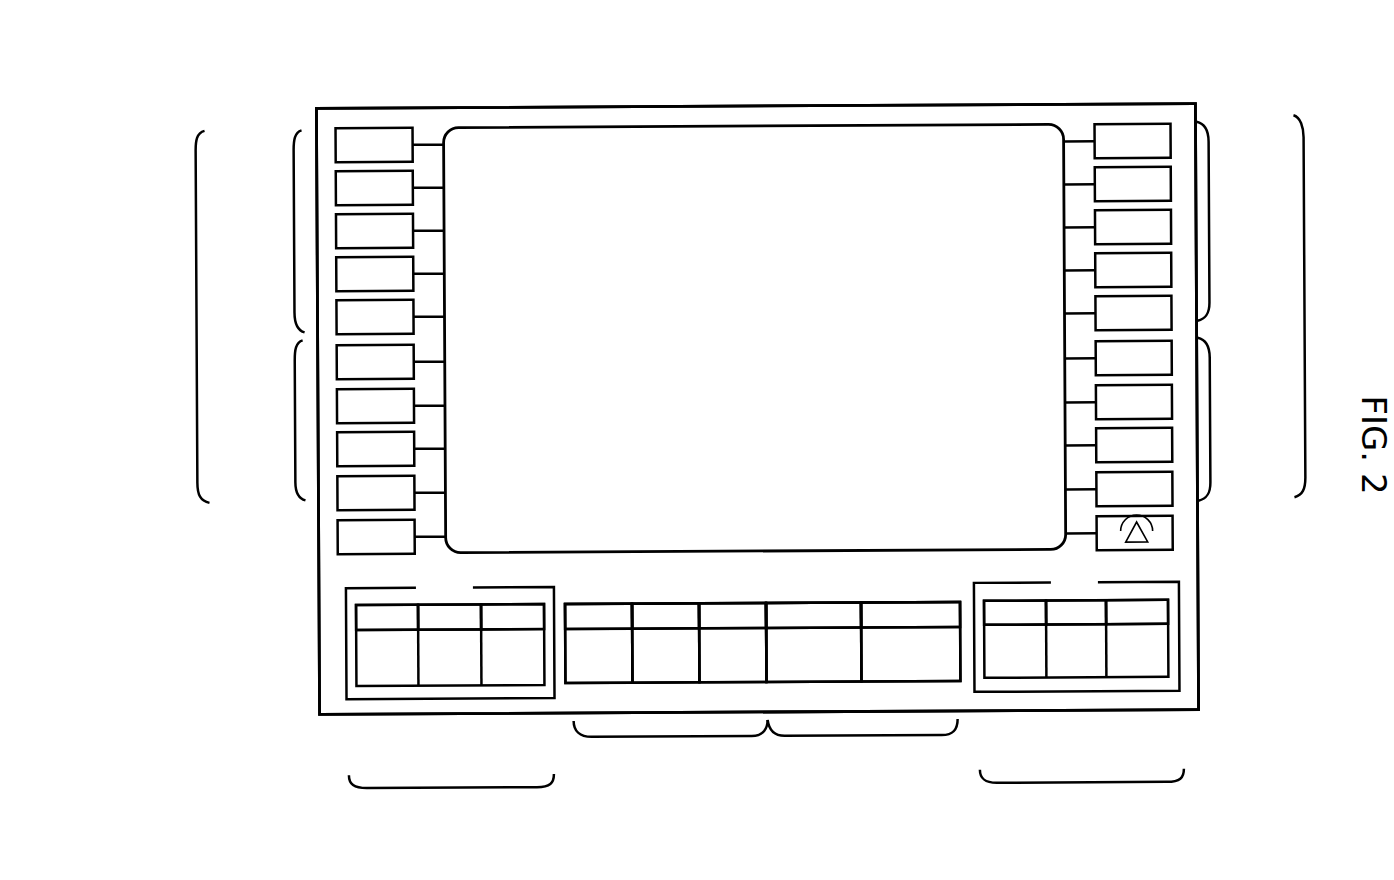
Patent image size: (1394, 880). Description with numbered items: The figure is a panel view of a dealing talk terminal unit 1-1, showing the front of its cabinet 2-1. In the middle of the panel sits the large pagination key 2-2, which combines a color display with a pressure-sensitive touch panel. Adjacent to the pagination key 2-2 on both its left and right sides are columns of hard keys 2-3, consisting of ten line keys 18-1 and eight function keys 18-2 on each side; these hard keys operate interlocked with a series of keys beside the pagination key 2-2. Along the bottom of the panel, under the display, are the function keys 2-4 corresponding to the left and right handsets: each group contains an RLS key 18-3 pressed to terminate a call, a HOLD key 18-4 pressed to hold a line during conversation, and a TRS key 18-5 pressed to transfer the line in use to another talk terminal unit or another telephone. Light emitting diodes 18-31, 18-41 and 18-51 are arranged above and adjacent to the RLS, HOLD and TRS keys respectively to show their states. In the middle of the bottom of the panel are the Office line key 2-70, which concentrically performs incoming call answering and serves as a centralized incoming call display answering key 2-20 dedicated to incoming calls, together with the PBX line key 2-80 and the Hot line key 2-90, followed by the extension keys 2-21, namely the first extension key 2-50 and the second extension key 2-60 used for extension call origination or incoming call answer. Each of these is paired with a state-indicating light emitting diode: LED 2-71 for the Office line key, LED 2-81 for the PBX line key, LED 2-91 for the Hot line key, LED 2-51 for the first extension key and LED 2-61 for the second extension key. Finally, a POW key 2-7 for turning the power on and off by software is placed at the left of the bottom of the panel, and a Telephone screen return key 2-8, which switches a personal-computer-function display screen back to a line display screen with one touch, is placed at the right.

The talk terminal unit 1-1 is at (430, 94).
The cabinet 2-1 is at (500, 106).
The pagination key 2-2 is at (680, 132).
The hard keys 2-3 is at (197, 290).
The line keys 18-1 is at (295, 195).
The function keys 18-2 is at (295, 378).
The "POW" key 2-7 is at (337, 535).
The "Telephone screen return" key 2-8 is at (1172, 533).
The function keys 2-4 is at (1018, 786).
The "RLS" keys 18-3 is at (382, 680).
The "HOLD" keys 18-4 is at (460, 678).
The "TRS" keys 18-5 is at (533, 678).
The light emitting diodes 18-31 is at (362, 620).
The light emitting diodes 18-41 is at (430, 620).
The light emitting diodes 18-51 is at (495, 620).
The centralized incoming call display answering key 2-20 is at (655, 738).
The "Office line" key 2-70 is at (580, 622).
The light emitting diode 2-71 is at (619, 618).
The "PBX line" key 2-80 is at (655, 622).
The light emitting diode 2-81 is at (689, 618).
The "Hot line" key 2-90 is at (723, 622).
The light emitting diode 2-91 is at (759, 618).
The extension keys 2-21 is at (863, 711).
The "Extension 1" key 2-50 is at (790, 622).
The light emitting diode 2-51 is at (843, 618).
The "Extension 2" key 2-60 is at (870, 622).
The light emitting diode 2-61 is at (912, 618).